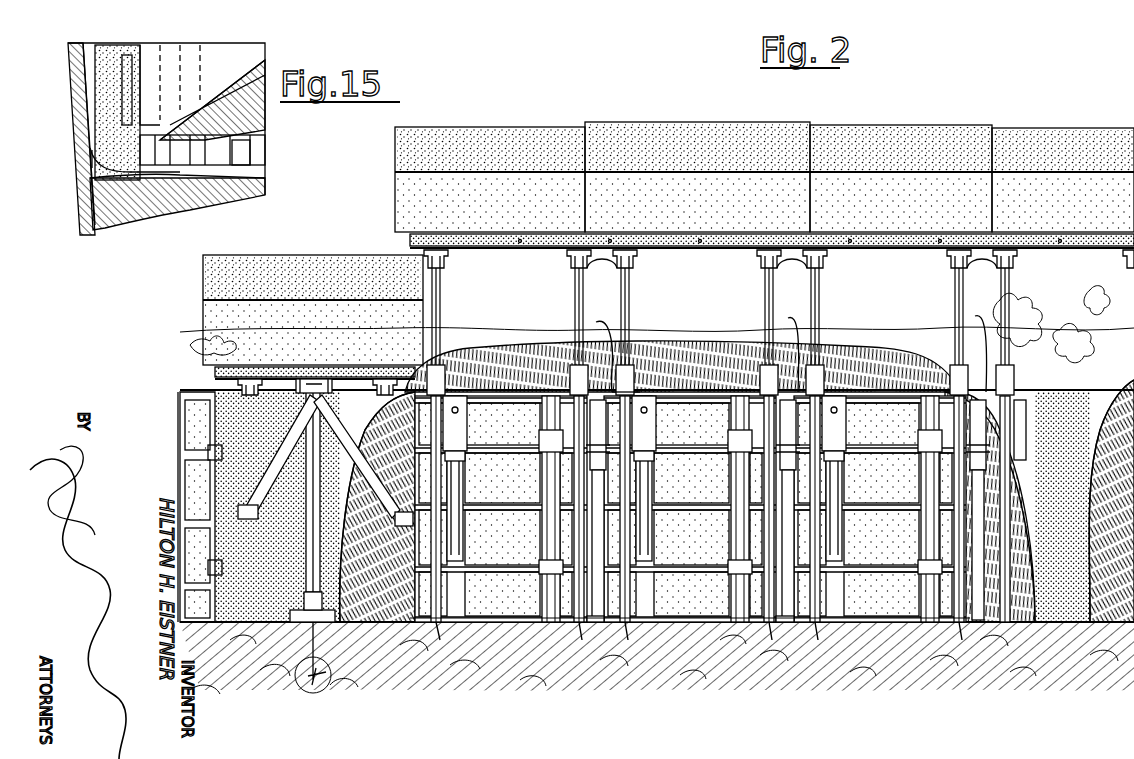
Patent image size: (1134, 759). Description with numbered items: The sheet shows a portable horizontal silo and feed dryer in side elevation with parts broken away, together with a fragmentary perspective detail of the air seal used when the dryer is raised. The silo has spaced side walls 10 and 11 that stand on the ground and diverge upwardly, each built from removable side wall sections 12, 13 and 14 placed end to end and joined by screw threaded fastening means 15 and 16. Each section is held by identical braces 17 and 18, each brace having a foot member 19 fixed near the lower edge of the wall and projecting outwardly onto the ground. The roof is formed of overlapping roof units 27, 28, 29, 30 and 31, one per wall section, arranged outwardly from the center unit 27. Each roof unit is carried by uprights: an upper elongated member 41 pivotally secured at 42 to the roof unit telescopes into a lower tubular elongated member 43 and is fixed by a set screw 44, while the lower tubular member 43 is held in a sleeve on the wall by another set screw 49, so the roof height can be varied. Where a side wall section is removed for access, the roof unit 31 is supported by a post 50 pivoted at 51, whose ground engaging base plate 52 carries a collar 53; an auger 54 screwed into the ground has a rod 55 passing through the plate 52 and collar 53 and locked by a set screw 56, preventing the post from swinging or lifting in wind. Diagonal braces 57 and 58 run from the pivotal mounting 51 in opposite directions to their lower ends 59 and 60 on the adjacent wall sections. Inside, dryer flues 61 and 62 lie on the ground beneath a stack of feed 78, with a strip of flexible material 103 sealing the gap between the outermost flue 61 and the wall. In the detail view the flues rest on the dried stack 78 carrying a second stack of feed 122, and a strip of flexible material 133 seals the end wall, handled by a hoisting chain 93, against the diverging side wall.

In FIG. 15, the side wall 10 is at (80, 200).
In FIG. 2, the side wall 10 is at (256, 657).
In FIG. 2, the side wall 11 is at (712, 638).
In FIG. 2, the side wall section 12 is at (510, 604).
In FIG. 2, the side wall section 13 is at (706, 602).
In FIG. 2, the side wall section 14 is at (896, 602).
In FIG. 2, the fastening means 15 is at (598, 626).
In FIG. 2, the fastening means 16 is at (610, 452).
In FIG. 2, the brace 17 is at (458, 538).
In FIG. 2, the brace 18 is at (540, 544).
In FIG. 2, the foot member 19 is at (440, 630).
In FIG. 2, the roof unit 27 is at (674, 118).
In FIG. 2, the roof unit 28 is at (926, 119).
In FIG. 2, the roof unit 29 is at (1114, 123).
In FIG. 2, the roof unit 30 is at (504, 121).
In FIG. 2, the roof unit 31 is at (340, 249).
In FIG. 2, the upper elongated member 41 is at (432, 300).
In FIG. 2, the pivotal securement 42 is at (448, 260).
In FIG. 2, the lower tubular elongated member 43 is at (790, 339).
In FIG. 2, the fastening means 44 is at (625, 392).
In FIG. 2, the set screw 49 is at (600, 412).
In FIG. 2, the post 50 is at (277, 507).
In FIG. 2, the pivotal mounting 51 is at (300, 378).
In FIG. 2, the base plate 52 is at (262, 608).
In FIG. 2, the collar 53 is at (348, 625).
In FIG. 2, the auger 54 is at (313, 692).
In FIG. 2, the rod 55 is at (290, 625).
In FIG. 2, the set screw 56 is at (288, 588).
In FIG. 2, the diagonal brace 57 is at (285, 400).
In FIG. 2, the diagonal brace 58 is at (372, 396).
In FIG. 2, the lower end 59 is at (185, 462).
In FIG. 2, the lower end 60 is at (428, 472).
In FIG. 15, the flue 61 is at (182, 195).
In FIG. 15, the flue 62 is at (247, 170).
In FIG. 15, the stack of feed 78 is at (205, 200).
In FIG. 15, the hoisting chain 93 is at (200, 75).
In FIG. 15, the strip of flexible material 103 is at (85, 162).
In FIG. 15, the second stack of feed 122 is at (248, 100).
In FIG. 15, the strip of flexible material 133 is at (104, 45).